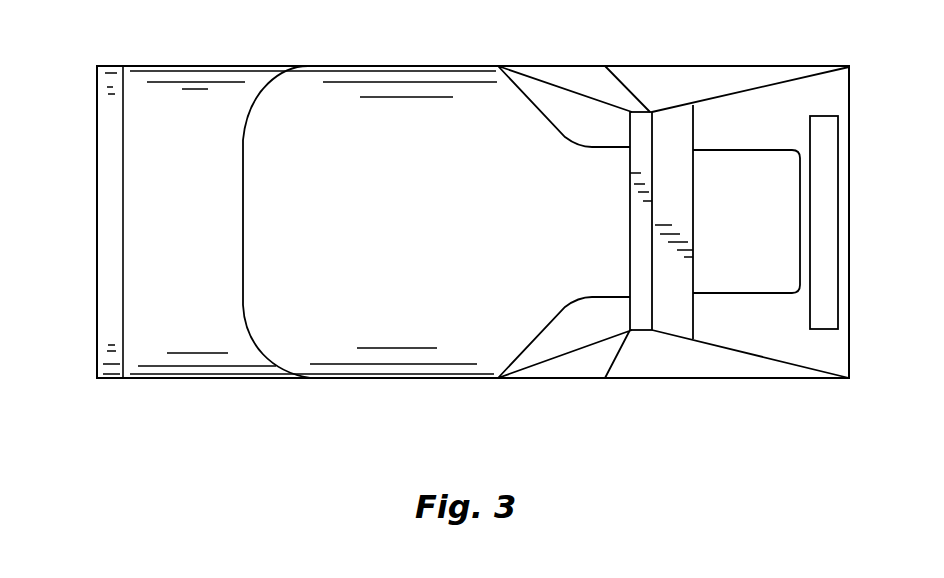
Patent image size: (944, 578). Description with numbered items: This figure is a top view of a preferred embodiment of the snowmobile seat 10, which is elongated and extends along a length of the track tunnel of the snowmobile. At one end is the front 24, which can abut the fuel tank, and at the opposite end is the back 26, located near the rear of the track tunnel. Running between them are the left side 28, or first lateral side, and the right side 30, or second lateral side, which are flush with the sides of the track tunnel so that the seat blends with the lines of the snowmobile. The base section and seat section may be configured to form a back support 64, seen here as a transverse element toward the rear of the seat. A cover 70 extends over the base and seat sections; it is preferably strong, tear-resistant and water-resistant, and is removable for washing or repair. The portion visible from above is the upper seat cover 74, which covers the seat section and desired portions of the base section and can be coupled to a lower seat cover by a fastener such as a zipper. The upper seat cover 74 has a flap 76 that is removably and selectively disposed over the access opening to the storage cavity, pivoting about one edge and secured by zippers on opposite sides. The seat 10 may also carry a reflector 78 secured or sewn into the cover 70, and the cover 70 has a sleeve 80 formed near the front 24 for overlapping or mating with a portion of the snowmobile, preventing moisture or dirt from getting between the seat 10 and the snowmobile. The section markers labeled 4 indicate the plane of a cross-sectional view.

The snowmobile seat 10 is at (379, 433).
The front 24 is at (98, 365).
The back 26 is at (850, 120).
The left side 28 is at (165, 383).
The right side 30 is at (203, 64).
The back support 64 is at (632, 112).
The cover 70 is at (80, 324).
The upper seat cover 74 is at (256, 357).
The flap 76 is at (727, 162).
The reflector 78 is at (829, 271).
The sleeve 80 is at (97, 93).
The section line 4- 4 is at (85, 222).